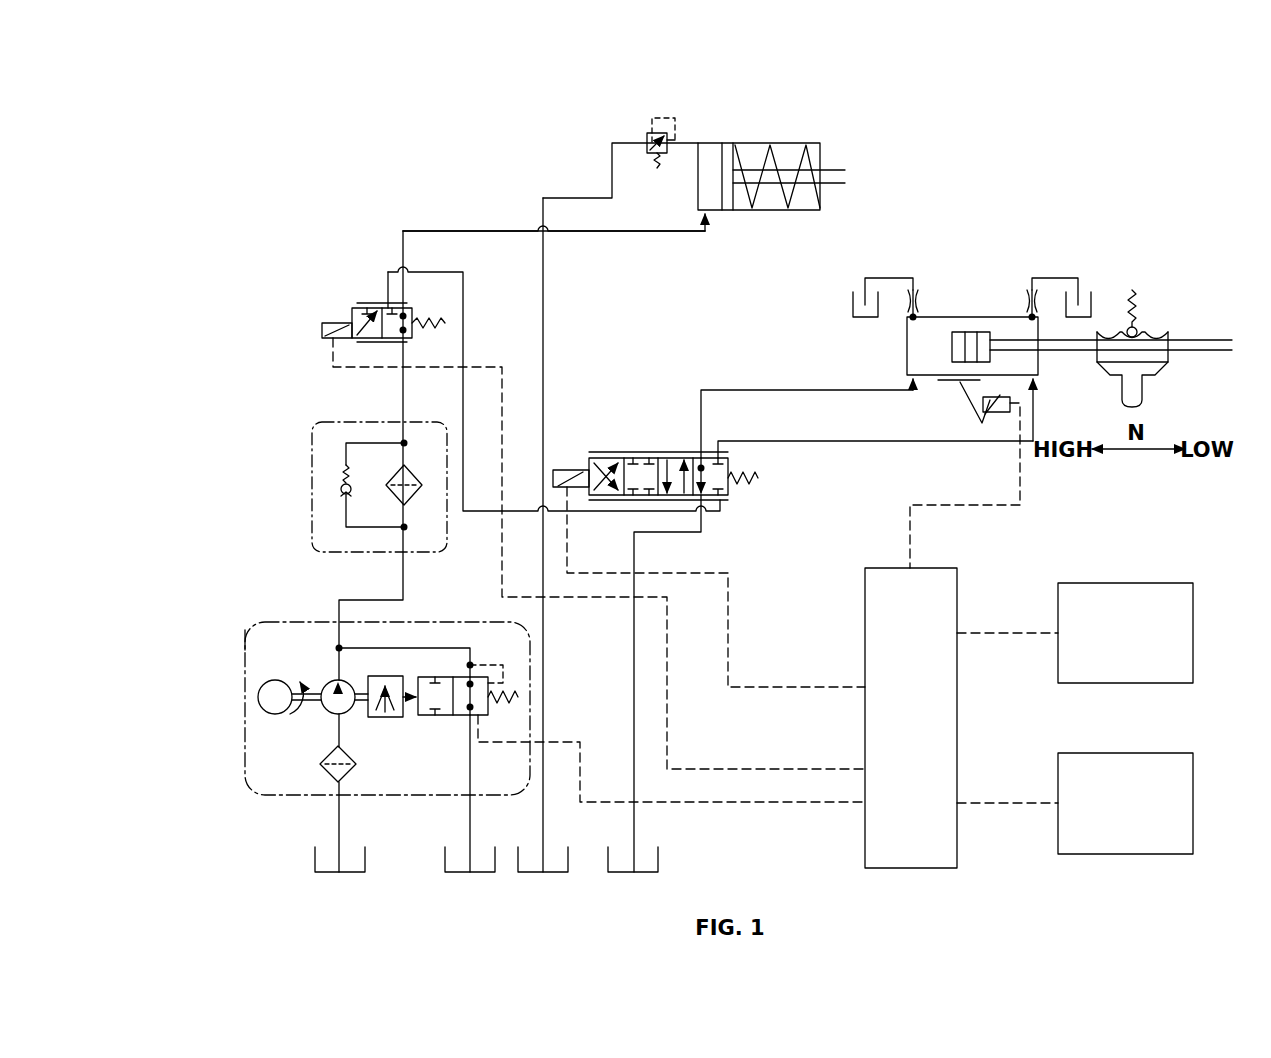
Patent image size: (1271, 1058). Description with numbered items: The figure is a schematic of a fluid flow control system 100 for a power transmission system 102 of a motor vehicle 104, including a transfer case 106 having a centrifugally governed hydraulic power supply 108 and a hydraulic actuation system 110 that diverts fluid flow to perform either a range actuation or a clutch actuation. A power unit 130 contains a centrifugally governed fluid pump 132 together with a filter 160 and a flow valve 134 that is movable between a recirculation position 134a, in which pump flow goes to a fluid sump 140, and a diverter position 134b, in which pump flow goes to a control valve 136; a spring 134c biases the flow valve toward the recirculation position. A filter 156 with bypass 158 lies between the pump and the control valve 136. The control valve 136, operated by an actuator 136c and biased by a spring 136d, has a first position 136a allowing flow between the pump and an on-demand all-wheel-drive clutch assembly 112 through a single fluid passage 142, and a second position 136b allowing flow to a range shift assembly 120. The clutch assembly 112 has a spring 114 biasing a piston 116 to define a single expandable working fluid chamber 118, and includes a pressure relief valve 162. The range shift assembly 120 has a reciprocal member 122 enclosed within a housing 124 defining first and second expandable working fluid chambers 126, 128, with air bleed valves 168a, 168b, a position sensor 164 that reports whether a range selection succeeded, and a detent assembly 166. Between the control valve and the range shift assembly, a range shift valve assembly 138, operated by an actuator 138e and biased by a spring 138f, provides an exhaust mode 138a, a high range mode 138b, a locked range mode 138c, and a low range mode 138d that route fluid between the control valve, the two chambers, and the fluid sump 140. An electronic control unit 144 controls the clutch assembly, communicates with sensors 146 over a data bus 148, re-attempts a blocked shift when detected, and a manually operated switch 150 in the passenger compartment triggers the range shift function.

The fluid flow control system 100 is at (350, 152).
The power transmission system 102 is at (245, 612).
The motor vehicle 104 is at (1019, 241).
The transfer case 106 is at (240, 635).
The centrifugally governed hydraulic power supply 108 is at (315, 670).
The hydraulic actuation system 110 is at (378, 304).
The on-demand all-wheel-drive clutch assembly 112 is at (758, 143).
The spring 114 is at (775, 160).
The piston 116 is at (730, 150).
The single expandable working fluid chamber 118 is at (712, 172).
The range shift assembly 120 is at (1090, 245).
The reciprocal member 122 is at (967, 318).
The housing 124 is at (987, 330).
The first expandable working fluid chamber 126 is at (1007, 332).
The second expandable working fluid chamber 128 is at (928, 332).
The power unit 130 is at (245, 678).
The centrifugally governed fluid pump 132 is at (327, 708).
The flow valve 134 is at (486, 728).
The recirculation position 134a is at (461, 718).
The diverter position 134b is at (428, 717).
The spring 134c is at (524, 697).
The control valve 136 is at (378, 327).
The first position 136a is at (388, 345).
The second position 136b is at (357, 308).
The actuator 136c is at (322, 337).
The spring 136d is at (447, 318).
The range shift valve assembly 138 is at (702, 463).
The exhaust mode 138a is at (715, 500).
The high range mode 138b is at (678, 460).
The locked range mode 138c is at (638, 460).
The low range mode 138d is at (598, 460).
The actuator 138e is at (550, 476).
The spring 138f is at (764, 478).
The fluid sump 140 is at (315, 850).
The single fluid passage 142 is at (470, 231).
The electronic control unit 144 is at (896, 730).
The sensors 146 is at (1113, 644).
The data bus 148 is at (1003, 633).
The manually operated switch 150 is at (1113, 814).
The filter 156 is at (415, 500).
The bypass 158 is at (330, 480).
The filter 160 is at (320, 765).
The pressure relief valve 162 is at (647, 140).
The position sensor 164 is at (950, 393).
The detent assembly 166 is at (1160, 322).
The air bleed valve 168a is at (1032, 290).
The air bleed valve 168b is at (905, 297).